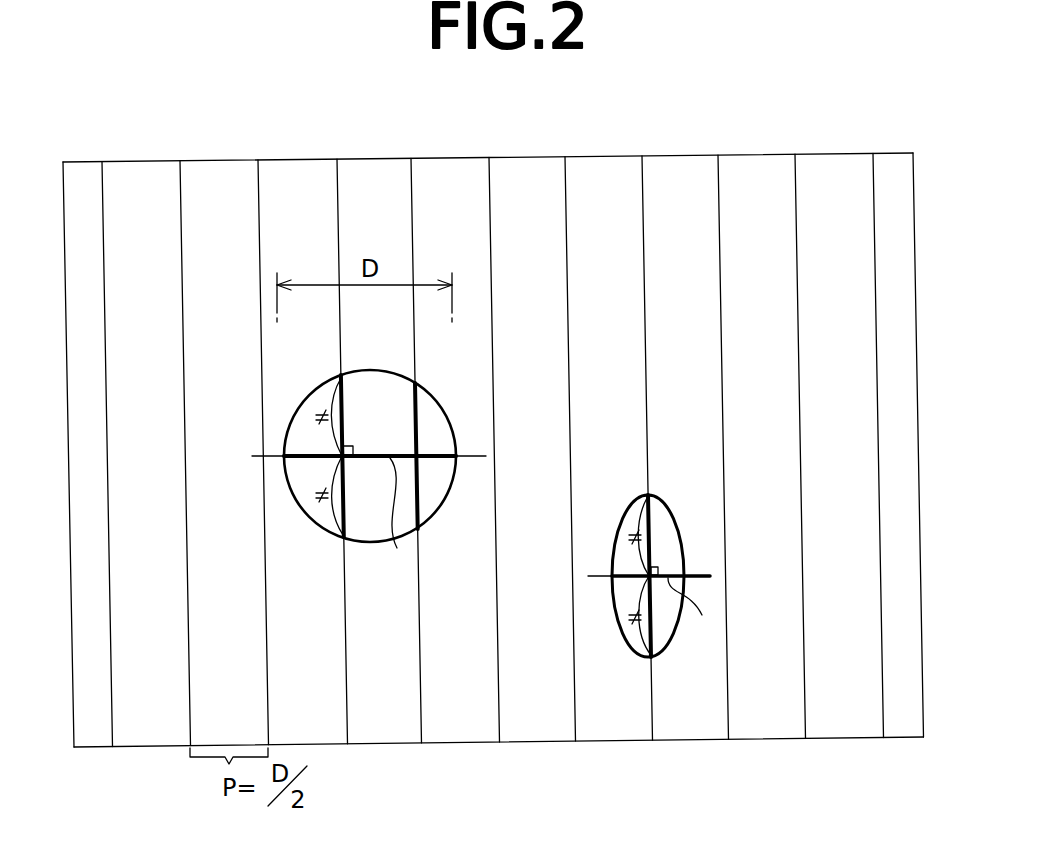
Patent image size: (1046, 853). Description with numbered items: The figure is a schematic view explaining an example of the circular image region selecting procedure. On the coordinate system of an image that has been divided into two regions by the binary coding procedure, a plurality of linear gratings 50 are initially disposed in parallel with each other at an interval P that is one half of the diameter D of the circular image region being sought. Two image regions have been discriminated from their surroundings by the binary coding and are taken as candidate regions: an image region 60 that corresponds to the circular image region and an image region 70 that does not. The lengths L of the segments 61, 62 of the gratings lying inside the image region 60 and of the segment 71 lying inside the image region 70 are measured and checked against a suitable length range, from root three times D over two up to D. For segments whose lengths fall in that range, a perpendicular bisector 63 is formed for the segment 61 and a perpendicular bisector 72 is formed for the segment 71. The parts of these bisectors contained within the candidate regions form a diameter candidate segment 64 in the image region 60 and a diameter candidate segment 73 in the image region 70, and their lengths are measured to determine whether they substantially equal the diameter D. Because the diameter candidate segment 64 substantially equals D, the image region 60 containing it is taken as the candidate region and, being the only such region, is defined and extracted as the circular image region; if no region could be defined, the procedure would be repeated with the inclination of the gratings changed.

The linear gratings 50 is at (258, 182).
The image region 60 is at (378, 387).
The segment 61 is at (340, 512).
The segment 62 is at (420, 492).
The perpendicular bisector 63 is at (473, 455).
The diameter candidate segment 64 is at (397, 548).
The image region 70 is at (658, 508).
The segment 71 is at (652, 633).
The perpendicular bisector 72 is at (702, 573).
The diameter candidate segment 73 is at (693, 612).